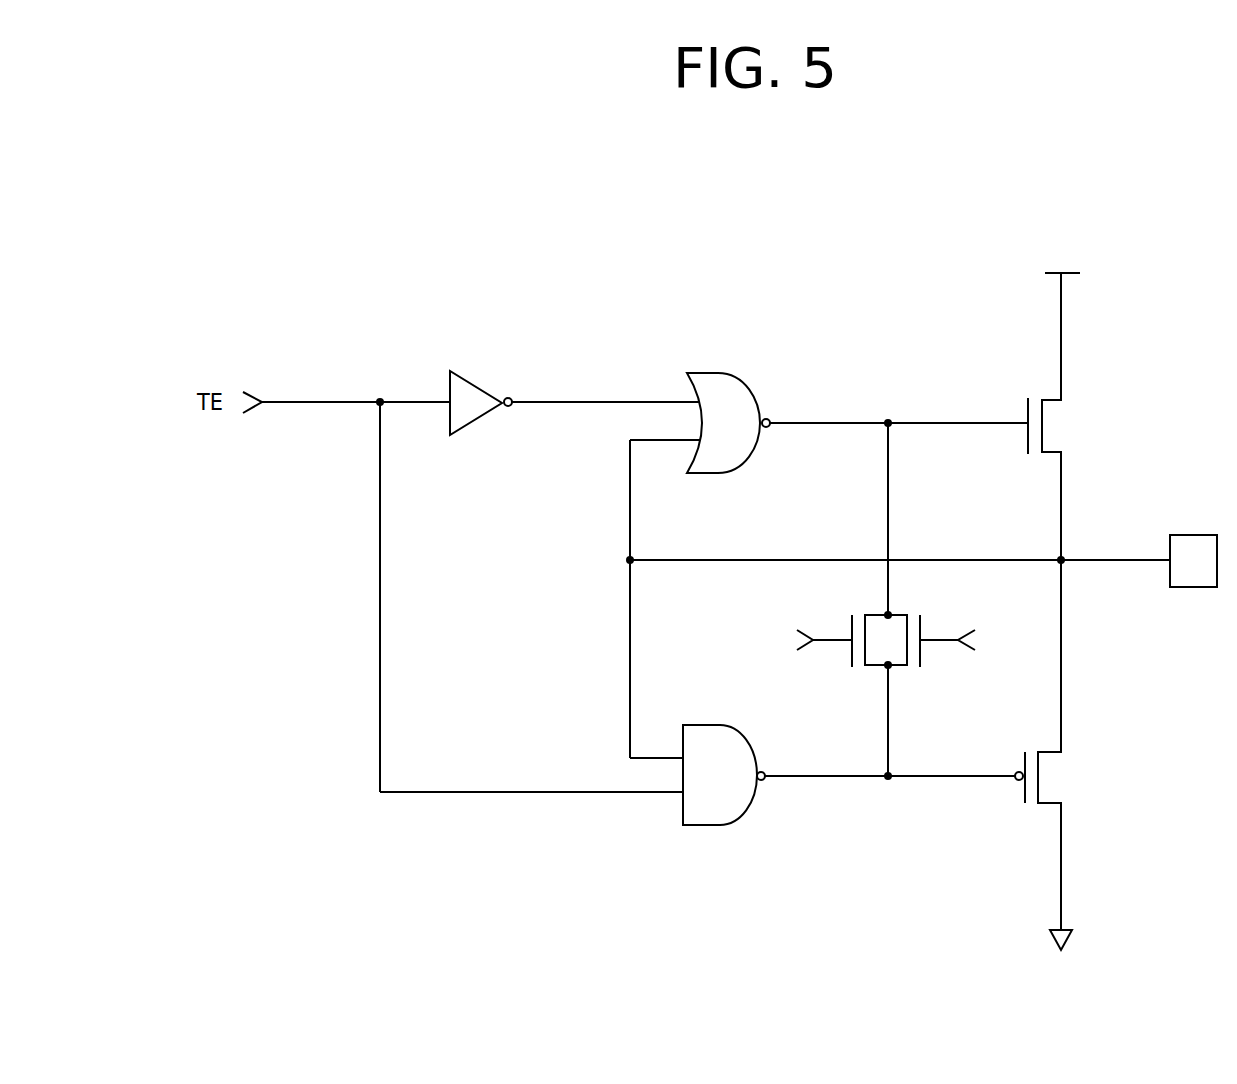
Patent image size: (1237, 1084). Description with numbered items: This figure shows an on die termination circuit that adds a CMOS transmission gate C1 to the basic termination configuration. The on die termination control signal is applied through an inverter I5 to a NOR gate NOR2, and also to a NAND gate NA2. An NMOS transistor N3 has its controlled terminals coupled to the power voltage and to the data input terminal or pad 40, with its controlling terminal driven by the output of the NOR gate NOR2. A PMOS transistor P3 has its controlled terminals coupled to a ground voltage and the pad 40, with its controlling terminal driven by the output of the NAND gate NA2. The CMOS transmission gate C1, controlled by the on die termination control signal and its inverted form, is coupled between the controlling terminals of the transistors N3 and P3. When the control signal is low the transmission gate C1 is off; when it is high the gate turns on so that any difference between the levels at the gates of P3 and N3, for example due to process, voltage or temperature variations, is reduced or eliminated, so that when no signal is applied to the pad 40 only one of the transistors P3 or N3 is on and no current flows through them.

The data input terminal or pad 40 is at (1190, 535).
The inverter I5 is at (482, 384).
The NOR gate NOR2 is at (753, 390).
The NAND gate NA2 is at (750, 737).
The NMOS transistor N3 is at (1054, 401).
The PMOS transistor P3 is at (1045, 755).
The CMOS transmission gate C1 is at (897, 667).